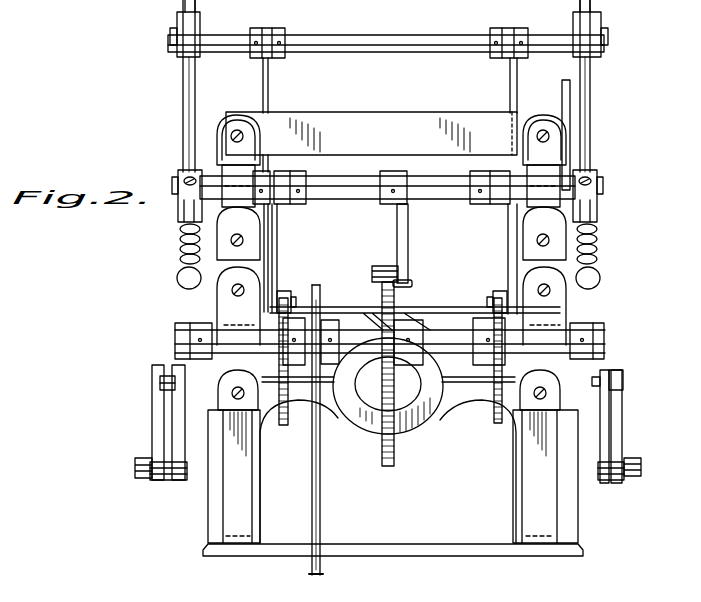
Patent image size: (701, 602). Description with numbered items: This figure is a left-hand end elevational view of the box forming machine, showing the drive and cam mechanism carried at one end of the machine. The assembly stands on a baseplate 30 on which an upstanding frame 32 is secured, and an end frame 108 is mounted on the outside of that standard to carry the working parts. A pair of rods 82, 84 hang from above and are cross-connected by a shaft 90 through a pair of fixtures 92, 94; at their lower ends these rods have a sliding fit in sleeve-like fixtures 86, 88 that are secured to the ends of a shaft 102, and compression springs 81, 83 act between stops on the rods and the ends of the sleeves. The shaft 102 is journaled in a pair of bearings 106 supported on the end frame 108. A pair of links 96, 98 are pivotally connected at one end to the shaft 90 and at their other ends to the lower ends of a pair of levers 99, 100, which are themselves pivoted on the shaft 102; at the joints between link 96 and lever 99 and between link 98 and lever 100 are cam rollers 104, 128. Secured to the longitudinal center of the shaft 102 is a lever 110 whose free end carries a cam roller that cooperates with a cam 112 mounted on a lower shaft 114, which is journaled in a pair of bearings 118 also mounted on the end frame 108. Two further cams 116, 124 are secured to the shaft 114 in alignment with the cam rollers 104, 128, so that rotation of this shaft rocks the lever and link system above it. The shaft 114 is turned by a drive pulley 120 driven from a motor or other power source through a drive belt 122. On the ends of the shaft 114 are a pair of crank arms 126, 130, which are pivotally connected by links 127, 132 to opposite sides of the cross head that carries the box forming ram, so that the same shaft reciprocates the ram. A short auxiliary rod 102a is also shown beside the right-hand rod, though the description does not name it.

The baseplate 30 is at (478, 545).
The frame 32 is at (572, 509).
The compression spring 81 is at (180, 258).
The rod 82 is at (184, 128).
The compression spring 83 is at (600, 260).
The rod 84 is at (591, 125).
The sleeve-like fixture 86 is at (180, 214).
The sleeve-like fixture 88 is at (598, 211).
The shaft 90 is at (354, 36).
The fixture 92 is at (190, 23).
The fixture 94 is at (575, 18).
The link 96 is at (268, 90).
The link 98 is at (510, 88).
The lever 99 is at (278, 230).
The lever 100 is at (507, 266).
The shaft 102 is at (332, 196).
The auxiliary rod 102a is at (572, 98).
The cam roller 104 is at (284, 291).
The bearing 106 is at (232, 170).
The end frame 108 is at (228, 509).
The lever 110 is at (409, 237).
The cam 112 is at (381, 456).
The shaft 114 is at (175, 338).
The cam 116 is at (286, 426).
The bearing 118 is at (228, 313).
The drive pulley 120 is at (322, 304).
The drive belt 122 is at (321, 512).
The cam 124 is at (497, 424).
The crank arm 126 is at (176, 407).
The link 127 is at (155, 438).
The cam roller 128 is at (497, 291).
The crank arm 130 is at (604, 427).
The link 132 is at (620, 406).